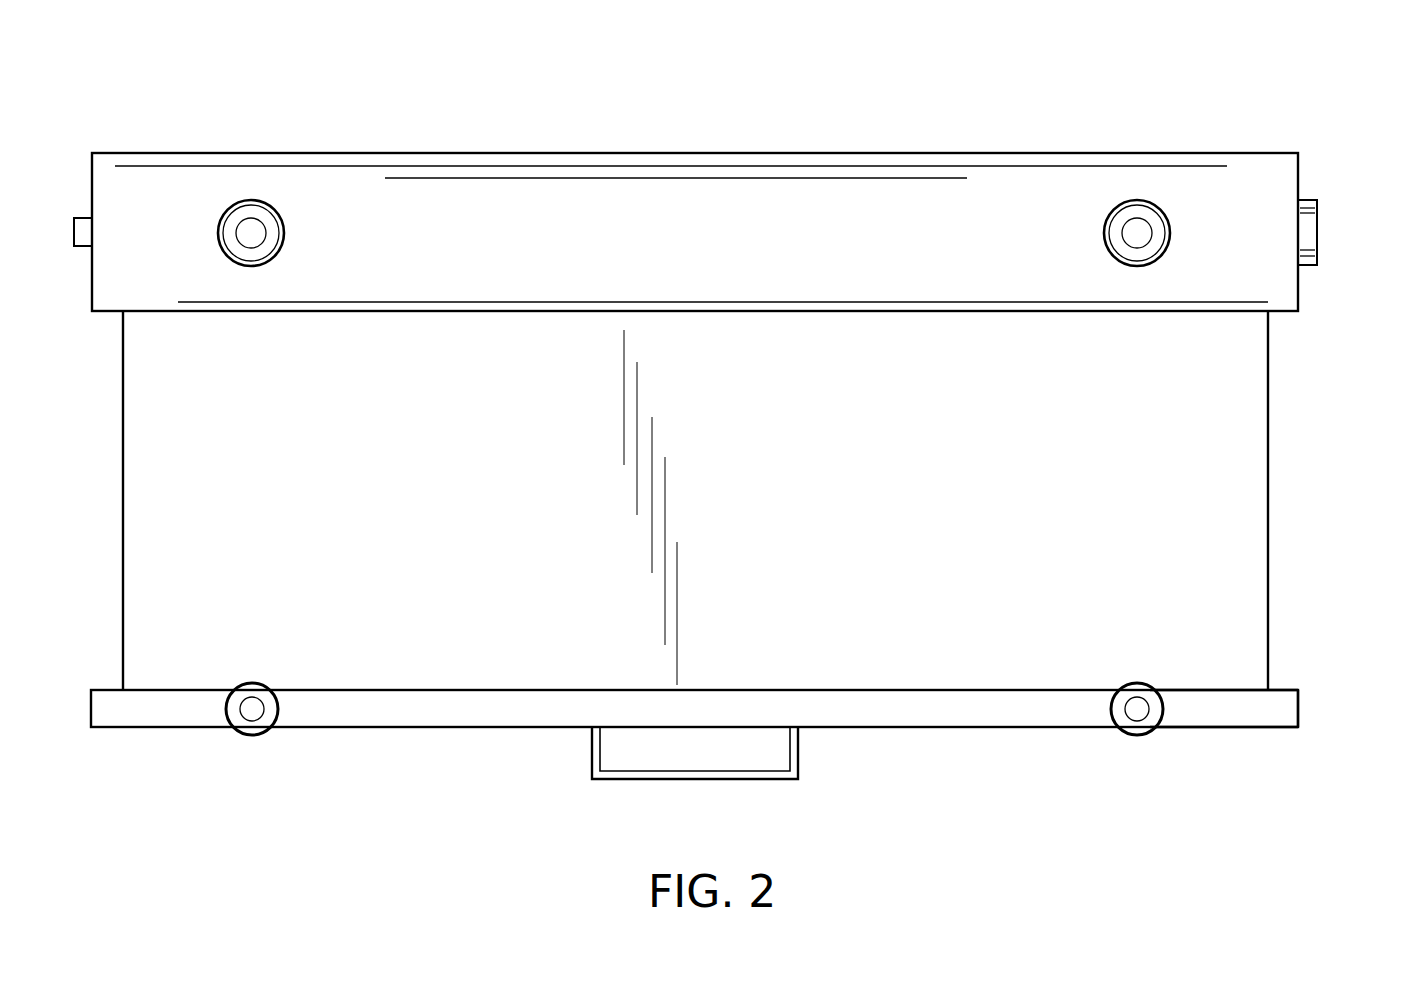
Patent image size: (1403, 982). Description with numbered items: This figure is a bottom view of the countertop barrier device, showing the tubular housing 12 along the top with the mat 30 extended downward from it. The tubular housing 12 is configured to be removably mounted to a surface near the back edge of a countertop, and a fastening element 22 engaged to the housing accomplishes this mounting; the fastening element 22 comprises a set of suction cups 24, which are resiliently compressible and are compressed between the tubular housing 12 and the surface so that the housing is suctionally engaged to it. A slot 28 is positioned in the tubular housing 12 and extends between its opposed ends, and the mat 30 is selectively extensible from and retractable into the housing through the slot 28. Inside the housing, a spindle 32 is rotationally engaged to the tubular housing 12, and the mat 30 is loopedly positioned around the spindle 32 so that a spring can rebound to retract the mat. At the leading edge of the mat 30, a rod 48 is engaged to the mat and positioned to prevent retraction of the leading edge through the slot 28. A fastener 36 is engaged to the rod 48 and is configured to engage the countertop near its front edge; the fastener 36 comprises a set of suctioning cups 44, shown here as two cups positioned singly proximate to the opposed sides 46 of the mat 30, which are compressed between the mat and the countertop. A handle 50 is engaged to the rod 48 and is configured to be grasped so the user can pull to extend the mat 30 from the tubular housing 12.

The tubular housing 12 is at (130, 264).
The fastening element 22 is at (694, 138).
The suction cups 24 is at (1100, 210).
The slot 28 is at (208, 322).
The mat 30 is at (1218, 355).
The spindle 32 is at (68, 220).
The fastener 36 is at (694, 753).
The suctioning cups 44 is at (694, 756).
The opposed sides 46 is at (135, 501).
The rod 48 is at (1277, 698).
The handle 50 is at (675, 787).